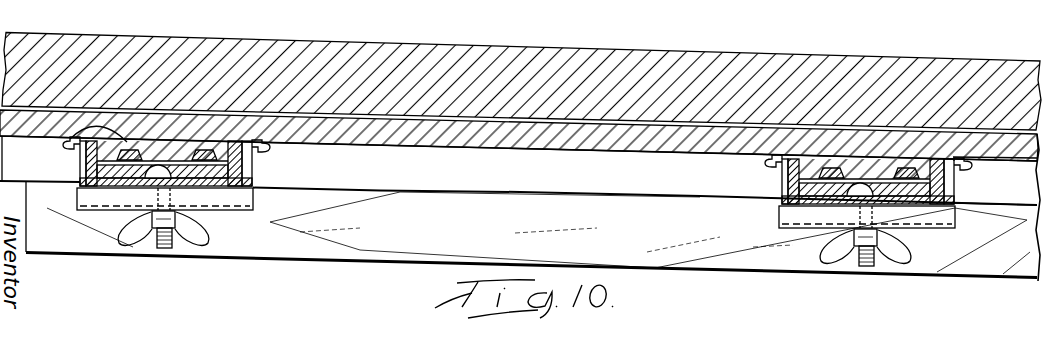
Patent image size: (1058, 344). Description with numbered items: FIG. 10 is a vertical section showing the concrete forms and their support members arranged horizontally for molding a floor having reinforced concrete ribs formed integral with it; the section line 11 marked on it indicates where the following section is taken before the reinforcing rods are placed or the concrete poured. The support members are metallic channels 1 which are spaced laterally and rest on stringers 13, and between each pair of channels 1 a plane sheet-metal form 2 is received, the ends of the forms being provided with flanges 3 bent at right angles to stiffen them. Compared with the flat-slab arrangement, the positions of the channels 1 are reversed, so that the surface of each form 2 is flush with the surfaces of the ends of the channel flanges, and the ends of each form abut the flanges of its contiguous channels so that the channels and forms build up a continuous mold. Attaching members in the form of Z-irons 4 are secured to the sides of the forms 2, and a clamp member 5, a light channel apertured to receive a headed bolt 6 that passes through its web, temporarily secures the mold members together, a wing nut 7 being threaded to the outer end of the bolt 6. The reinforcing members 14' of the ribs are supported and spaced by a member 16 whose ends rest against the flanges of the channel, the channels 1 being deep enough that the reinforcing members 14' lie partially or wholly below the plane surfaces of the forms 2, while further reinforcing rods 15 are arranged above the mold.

The section line 11— 11 is at (747, 103).
The reinforcing rod 15 is at (462, 122).
The form 2 is at (413, 145).
The reinforcing member of the rib 14' is at (40, 194).
The flange 3 is at (320, 183).
The stringer 13 is at (360, 254).
The channel 1 is at (253, 162).
The spacing member 16 is at (108, 186).
The Z-iron 4 is at (252, 173).
The clamp member 5 is at (258, 206).
The headed bolt 6 is at (163, 249).
The wing nut 7 is at (205, 246).